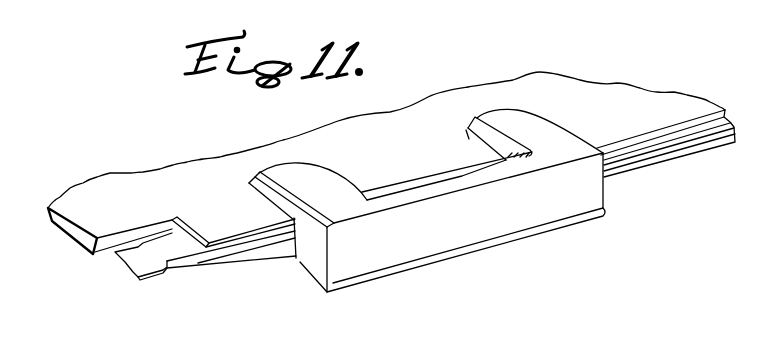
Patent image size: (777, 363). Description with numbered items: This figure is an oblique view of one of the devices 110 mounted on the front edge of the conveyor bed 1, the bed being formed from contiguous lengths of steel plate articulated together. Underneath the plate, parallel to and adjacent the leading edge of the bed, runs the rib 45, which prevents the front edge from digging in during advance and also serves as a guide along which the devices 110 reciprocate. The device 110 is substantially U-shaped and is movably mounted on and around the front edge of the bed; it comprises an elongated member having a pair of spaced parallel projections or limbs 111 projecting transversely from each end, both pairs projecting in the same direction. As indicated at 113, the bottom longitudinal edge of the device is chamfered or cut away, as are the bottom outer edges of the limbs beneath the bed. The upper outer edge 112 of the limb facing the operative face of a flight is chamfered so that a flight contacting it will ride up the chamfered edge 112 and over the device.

The bed 1 is at (130, 180).
The rib 45 is at (227, 261).
The device 110 is at (533, 239).
The limbs 111 is at (289, 179).
The upper outer edge 112 is at (249, 181).
The bottom longitudinal edge 113 is at (327, 285).